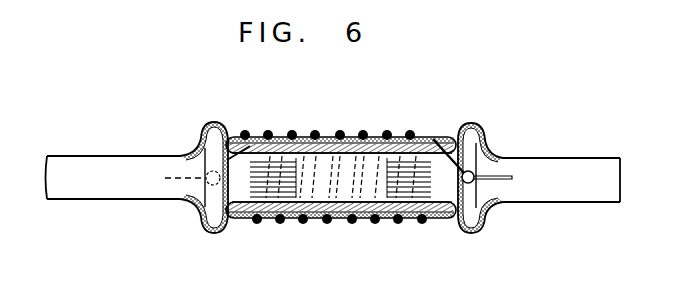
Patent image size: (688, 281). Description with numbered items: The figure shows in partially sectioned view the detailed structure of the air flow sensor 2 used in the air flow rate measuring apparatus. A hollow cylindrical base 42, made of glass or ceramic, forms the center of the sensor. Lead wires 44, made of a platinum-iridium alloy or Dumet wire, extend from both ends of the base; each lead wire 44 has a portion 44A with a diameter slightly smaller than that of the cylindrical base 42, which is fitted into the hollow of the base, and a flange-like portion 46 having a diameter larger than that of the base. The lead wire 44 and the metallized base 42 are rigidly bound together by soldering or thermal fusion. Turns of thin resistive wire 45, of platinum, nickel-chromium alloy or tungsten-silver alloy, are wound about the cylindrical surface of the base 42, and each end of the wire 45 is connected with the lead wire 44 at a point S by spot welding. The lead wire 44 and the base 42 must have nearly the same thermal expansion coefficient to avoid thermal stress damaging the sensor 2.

The air flow sensor 2 is at (333, 126).
The cylindrical base 42 is at (320, 223).
The lead wire 44 is at (117, 164).
The portion having a smaller diameter 44A is at (259, 170).
The resistive wire 45 is at (398, 223).
The flange 46 is at (230, 223).
The connection point S is at (471, 223).